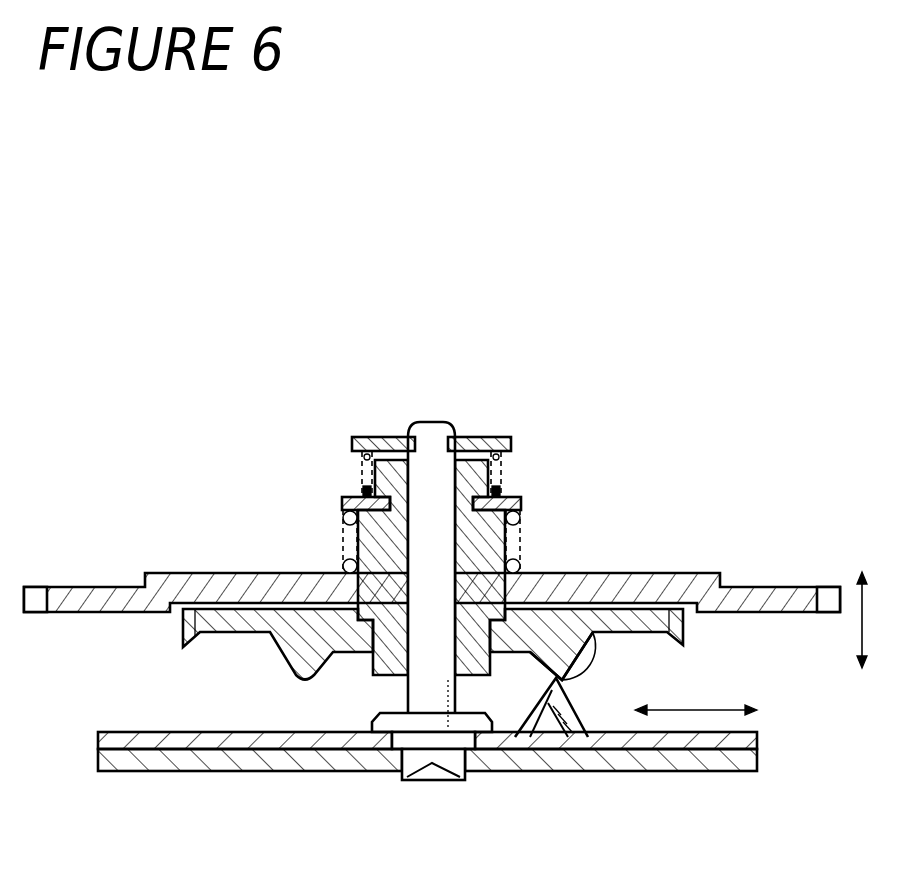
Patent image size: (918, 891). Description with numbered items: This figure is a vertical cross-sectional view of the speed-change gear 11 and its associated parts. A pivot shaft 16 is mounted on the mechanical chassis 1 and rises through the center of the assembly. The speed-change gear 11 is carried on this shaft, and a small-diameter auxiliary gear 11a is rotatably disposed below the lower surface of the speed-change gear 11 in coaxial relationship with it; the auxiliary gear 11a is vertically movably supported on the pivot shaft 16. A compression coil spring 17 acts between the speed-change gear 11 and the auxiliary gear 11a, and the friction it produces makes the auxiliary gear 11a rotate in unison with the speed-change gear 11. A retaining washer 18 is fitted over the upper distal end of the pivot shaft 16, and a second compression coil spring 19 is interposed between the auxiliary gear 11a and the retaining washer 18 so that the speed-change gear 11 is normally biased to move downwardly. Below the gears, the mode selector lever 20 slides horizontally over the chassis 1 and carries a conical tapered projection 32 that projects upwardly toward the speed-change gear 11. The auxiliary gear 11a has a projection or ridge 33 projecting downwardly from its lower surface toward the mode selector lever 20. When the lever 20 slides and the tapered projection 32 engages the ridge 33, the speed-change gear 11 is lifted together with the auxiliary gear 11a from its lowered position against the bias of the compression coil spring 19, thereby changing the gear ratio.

The mechanical chassis 1 is at (233, 775).
The speed-change gear 11 is at (642, 573).
The small-diameter auxiliary gear 11a is at (637, 632).
The pivot shaft 16 is at (430, 438).
The compression coil spring 17 is at (345, 517).
The retaining washer 18 is at (495, 438).
The compression coil spring 19 is at (363, 457).
The mode selector lever 20 is at (720, 770).
The conical tapered projection 32 is at (568, 692).
The projection or ridge 33 is at (583, 610).